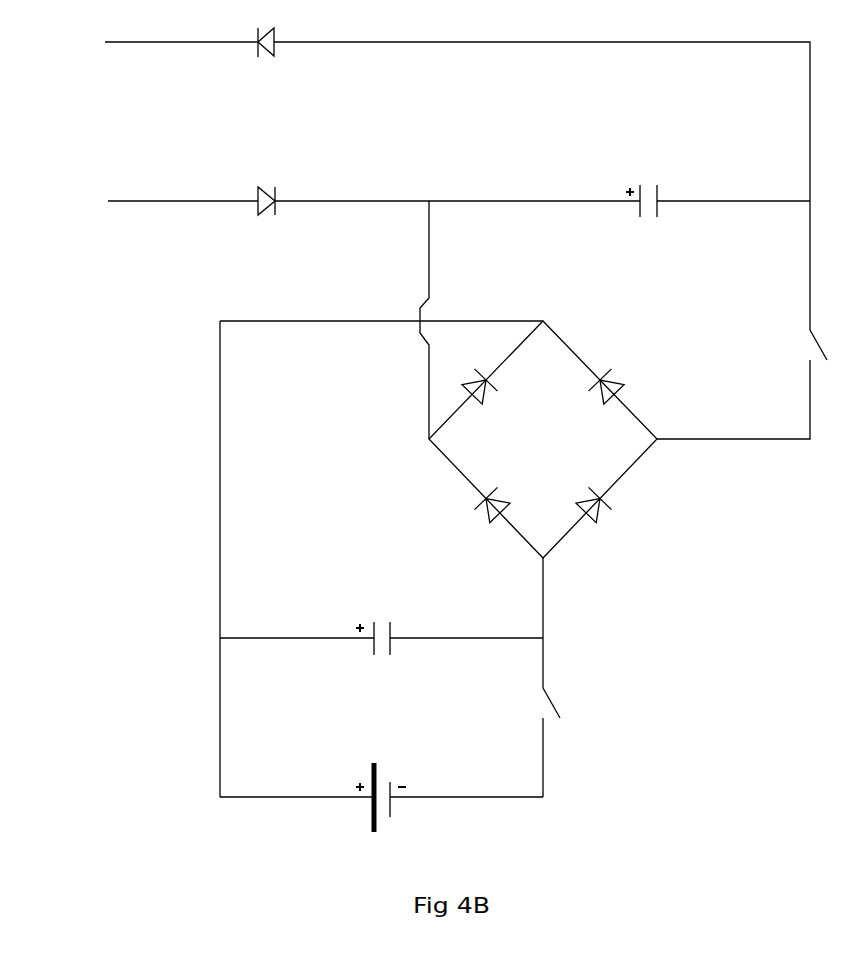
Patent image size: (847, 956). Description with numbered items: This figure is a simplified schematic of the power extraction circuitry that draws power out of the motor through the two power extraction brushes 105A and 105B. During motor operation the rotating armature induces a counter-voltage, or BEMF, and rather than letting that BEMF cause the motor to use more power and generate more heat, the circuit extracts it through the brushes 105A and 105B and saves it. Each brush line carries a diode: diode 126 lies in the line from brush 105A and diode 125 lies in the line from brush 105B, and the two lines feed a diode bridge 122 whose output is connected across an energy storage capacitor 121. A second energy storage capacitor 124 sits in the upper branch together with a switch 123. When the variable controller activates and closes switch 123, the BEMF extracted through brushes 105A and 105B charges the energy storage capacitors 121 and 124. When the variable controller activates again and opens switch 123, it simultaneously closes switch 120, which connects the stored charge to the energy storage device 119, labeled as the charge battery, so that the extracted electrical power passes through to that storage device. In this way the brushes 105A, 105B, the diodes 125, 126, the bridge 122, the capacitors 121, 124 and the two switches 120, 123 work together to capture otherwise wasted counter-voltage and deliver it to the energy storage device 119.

The power extraction brush 105A is at (425, 203).
The power extraction brush 105B is at (421, 179).
The energy storage device 119 is at (381, 800).
The switch 120 is at (576, 742).
The energy storage capacitor 121 is at (381, 619).
The diode bridge rectifier 122 is at (543, 439).
The switch 123 is at (742, 384).
The energy storage capacitor 124 is at (642, 183).
The diode 125 is at (260, 28).
The diode 126 is at (265, 181).